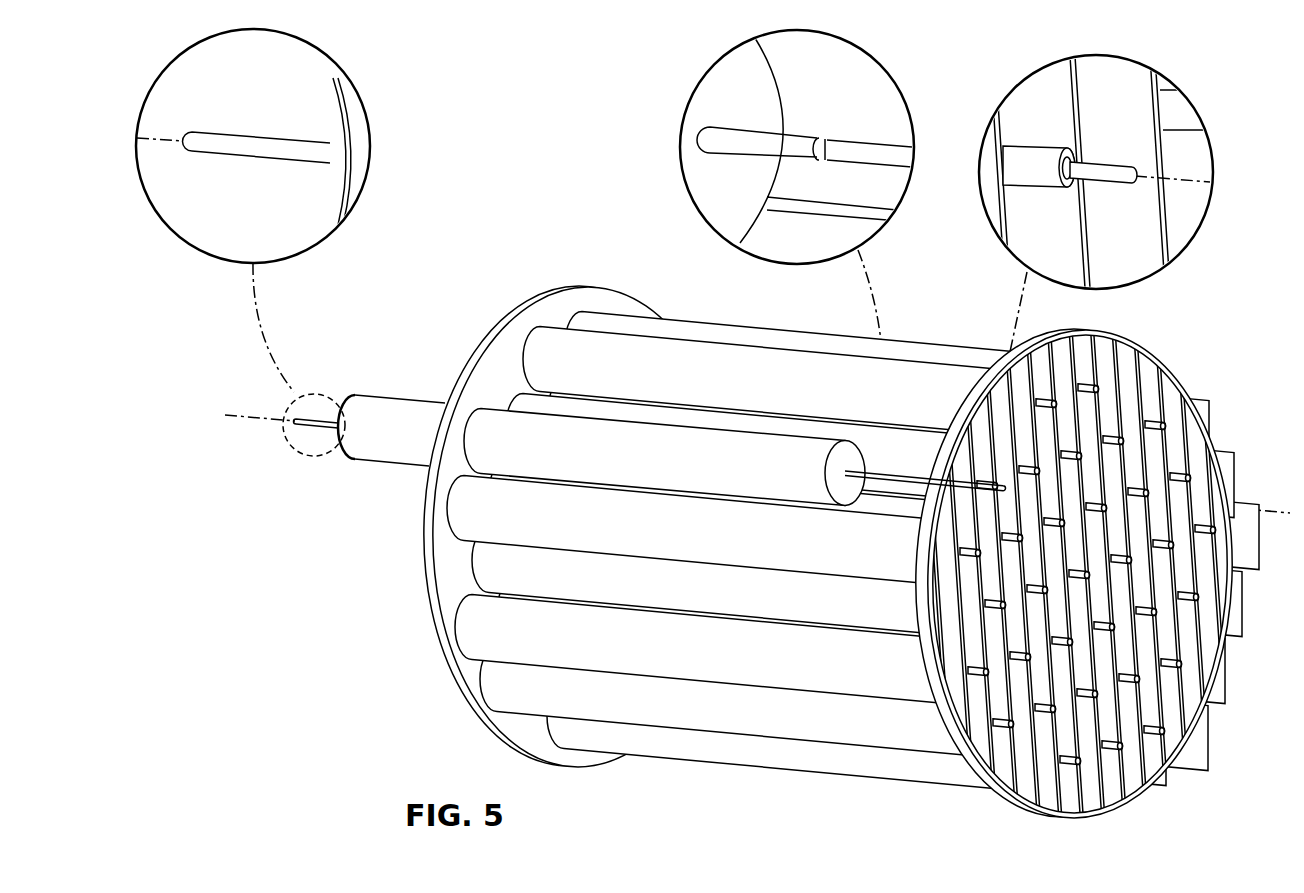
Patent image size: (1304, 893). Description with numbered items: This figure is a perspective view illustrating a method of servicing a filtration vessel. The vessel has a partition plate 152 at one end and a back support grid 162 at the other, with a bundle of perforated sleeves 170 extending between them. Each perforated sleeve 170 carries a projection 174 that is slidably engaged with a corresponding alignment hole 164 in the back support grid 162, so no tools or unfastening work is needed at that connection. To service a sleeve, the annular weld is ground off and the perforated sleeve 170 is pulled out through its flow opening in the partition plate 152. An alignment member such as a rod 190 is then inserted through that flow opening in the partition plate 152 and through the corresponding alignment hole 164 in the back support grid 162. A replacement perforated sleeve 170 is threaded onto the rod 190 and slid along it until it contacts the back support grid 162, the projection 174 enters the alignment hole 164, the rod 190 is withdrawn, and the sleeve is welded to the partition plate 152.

The partition plate 152 is at (553, 310).
The back support grid 162 is at (1172, 403).
The alignment hole 164 is at (1174, 475).
The perforated sleeve 170 is at (683, 347).
The projection 174 is at (807, 140).
The rod 190 is at (226, 142).